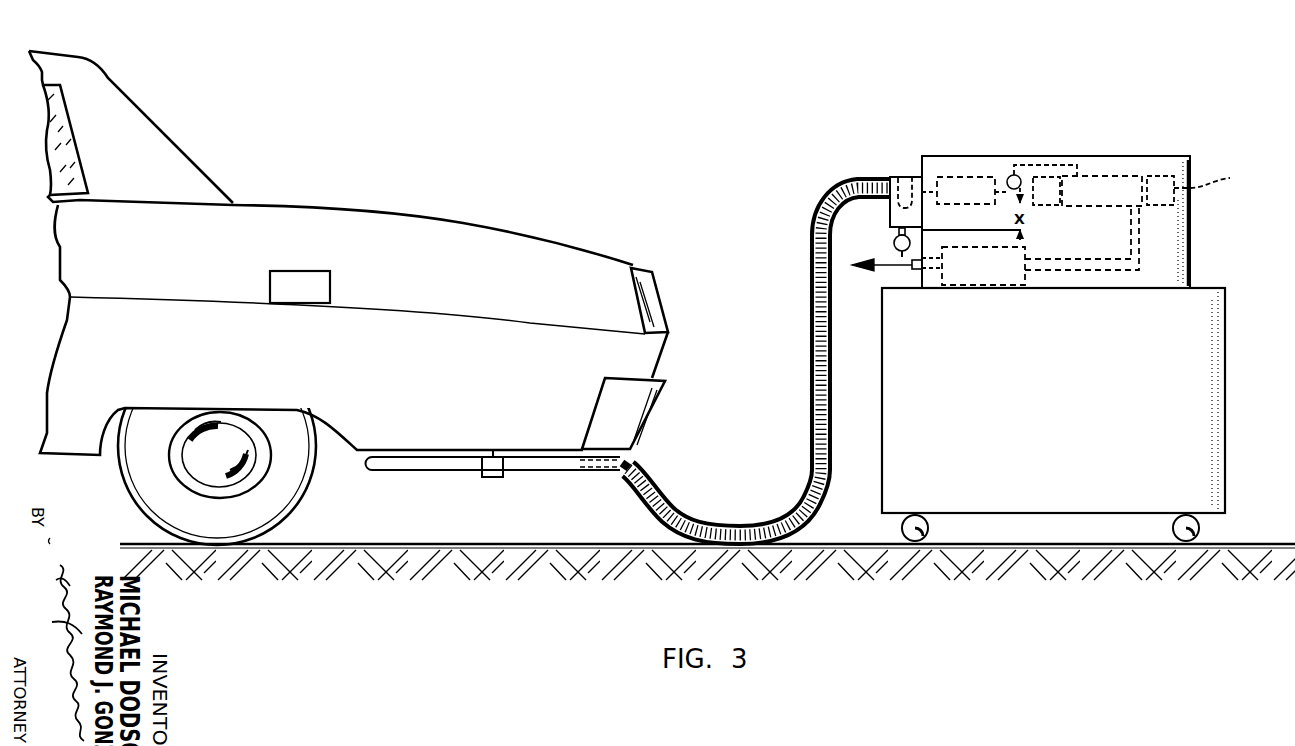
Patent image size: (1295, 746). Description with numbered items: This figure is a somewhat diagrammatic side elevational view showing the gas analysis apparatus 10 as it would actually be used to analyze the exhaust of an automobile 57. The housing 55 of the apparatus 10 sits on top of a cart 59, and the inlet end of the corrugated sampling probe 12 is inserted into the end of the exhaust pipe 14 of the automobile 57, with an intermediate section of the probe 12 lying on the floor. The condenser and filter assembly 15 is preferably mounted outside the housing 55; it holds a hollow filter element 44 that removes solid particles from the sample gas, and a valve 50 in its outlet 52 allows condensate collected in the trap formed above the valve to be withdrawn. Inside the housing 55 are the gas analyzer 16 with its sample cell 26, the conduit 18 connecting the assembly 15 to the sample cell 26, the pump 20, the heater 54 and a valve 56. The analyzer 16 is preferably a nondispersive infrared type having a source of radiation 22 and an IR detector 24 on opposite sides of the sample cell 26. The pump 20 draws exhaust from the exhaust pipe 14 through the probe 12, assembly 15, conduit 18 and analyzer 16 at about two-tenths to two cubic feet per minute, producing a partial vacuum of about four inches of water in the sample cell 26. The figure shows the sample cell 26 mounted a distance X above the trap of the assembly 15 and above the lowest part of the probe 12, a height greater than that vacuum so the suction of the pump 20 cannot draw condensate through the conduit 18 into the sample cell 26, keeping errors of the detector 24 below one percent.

The gas analysis apparatus 10 is at (1083, 84).
The sampling probe 12 is at (810, 357).
The exhaust pipe 14 is at (625, 462).
The condenser and filter assembly 15 is at (898, 174).
The gas analyzer 16 is at (1093, 173).
The conduit 18 is at (1038, 162).
The pump 20 is at (976, 291).
The source of radiation 22 is at (1050, 207).
The IR detector 24 is at (1215, 177).
The sample cell 26 is at (1124, 175).
The hollow filter element 44 is at (917, 177).
The valve 50 is at (894, 247).
The outlet 52 is at (898, 233).
The heater 54 is at (963, 177).
The housing 55 is at (1190, 265).
The valve 56 is at (1006, 178).
The automobile 57 is at (487, 225).
The cart 59 is at (1228, 350).